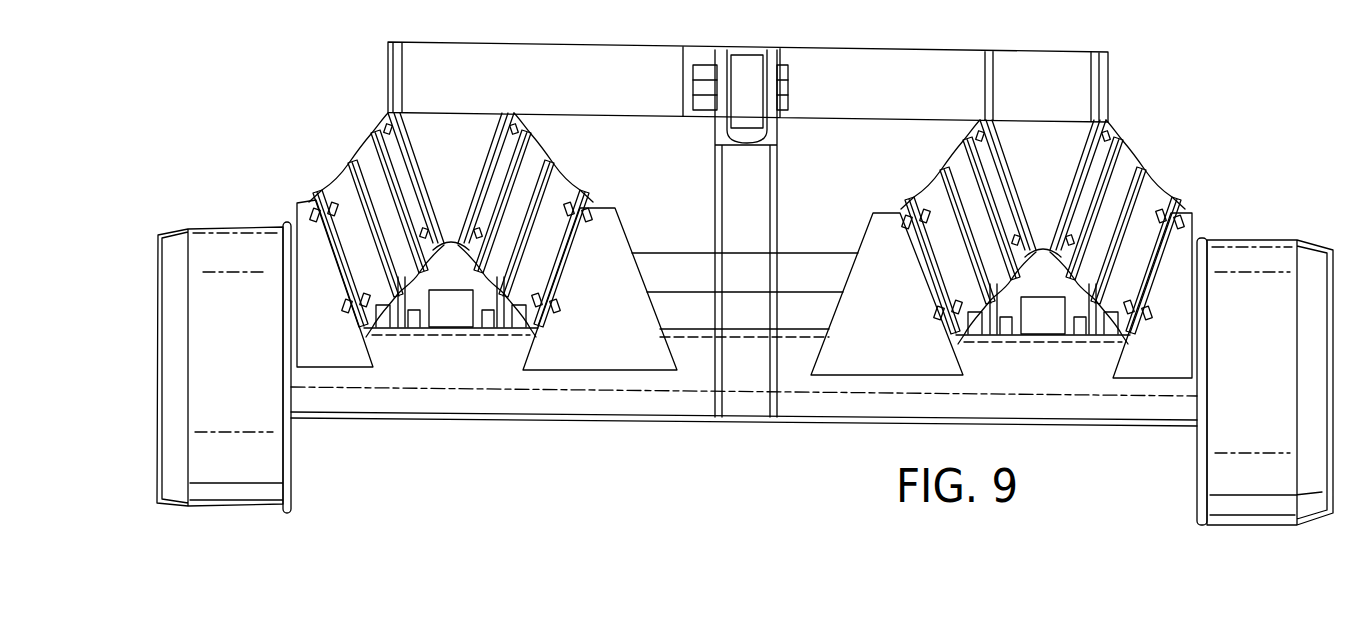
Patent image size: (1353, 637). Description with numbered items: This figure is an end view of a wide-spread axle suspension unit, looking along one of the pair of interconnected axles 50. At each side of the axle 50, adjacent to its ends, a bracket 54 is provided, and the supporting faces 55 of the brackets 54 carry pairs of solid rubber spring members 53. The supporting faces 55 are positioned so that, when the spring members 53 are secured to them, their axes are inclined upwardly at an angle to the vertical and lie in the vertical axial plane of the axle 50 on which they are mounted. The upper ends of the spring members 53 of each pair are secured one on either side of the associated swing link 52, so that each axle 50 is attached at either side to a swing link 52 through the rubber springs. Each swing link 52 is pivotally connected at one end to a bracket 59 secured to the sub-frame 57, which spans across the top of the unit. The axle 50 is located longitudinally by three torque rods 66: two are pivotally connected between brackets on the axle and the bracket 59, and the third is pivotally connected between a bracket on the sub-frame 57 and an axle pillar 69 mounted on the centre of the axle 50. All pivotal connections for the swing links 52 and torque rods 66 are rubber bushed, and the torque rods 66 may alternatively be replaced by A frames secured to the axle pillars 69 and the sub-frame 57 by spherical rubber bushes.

The axle 50 is at (465, 395).
The swing link 52 is at (747, 228).
The solid rubber spring member 53 is at (367, 163).
The bracket 54 is at (313, 270).
The supporting face 55 is at (320, 193).
The sub-frame 57 is at (493, 68).
The bracket 59 is at (397, 57).
The torque rod 66 is at (742, 72).
The axle pillar 69 is at (775, 220).